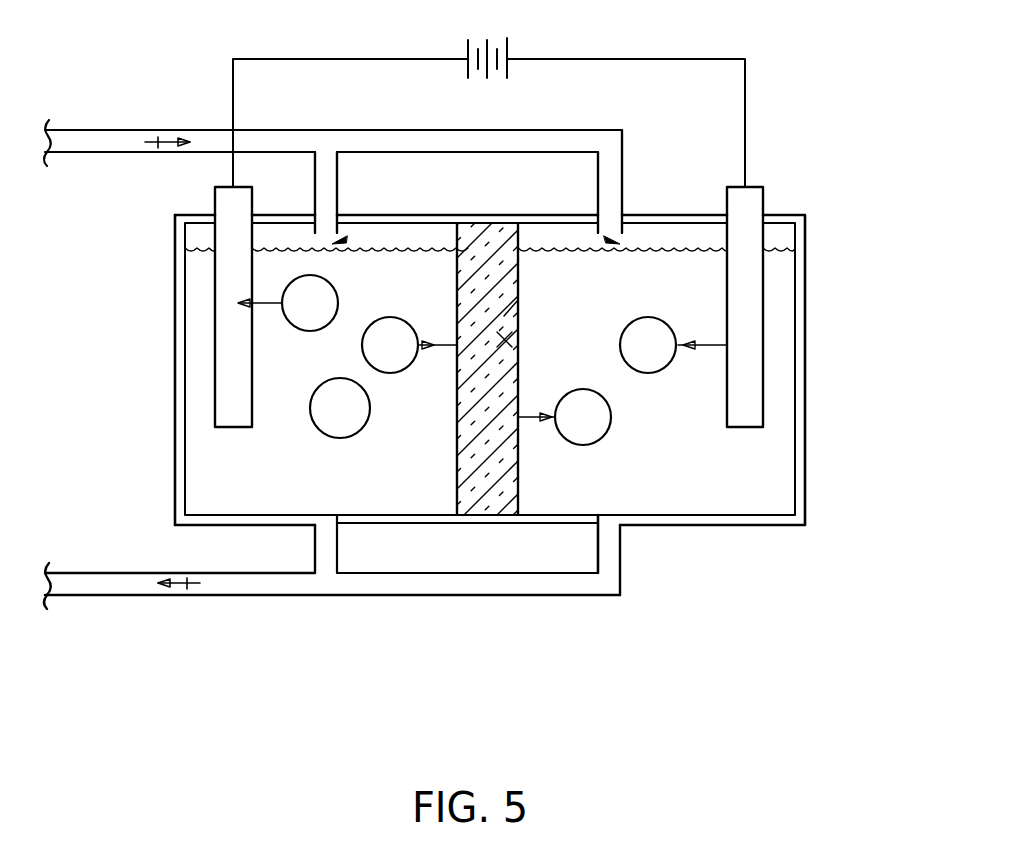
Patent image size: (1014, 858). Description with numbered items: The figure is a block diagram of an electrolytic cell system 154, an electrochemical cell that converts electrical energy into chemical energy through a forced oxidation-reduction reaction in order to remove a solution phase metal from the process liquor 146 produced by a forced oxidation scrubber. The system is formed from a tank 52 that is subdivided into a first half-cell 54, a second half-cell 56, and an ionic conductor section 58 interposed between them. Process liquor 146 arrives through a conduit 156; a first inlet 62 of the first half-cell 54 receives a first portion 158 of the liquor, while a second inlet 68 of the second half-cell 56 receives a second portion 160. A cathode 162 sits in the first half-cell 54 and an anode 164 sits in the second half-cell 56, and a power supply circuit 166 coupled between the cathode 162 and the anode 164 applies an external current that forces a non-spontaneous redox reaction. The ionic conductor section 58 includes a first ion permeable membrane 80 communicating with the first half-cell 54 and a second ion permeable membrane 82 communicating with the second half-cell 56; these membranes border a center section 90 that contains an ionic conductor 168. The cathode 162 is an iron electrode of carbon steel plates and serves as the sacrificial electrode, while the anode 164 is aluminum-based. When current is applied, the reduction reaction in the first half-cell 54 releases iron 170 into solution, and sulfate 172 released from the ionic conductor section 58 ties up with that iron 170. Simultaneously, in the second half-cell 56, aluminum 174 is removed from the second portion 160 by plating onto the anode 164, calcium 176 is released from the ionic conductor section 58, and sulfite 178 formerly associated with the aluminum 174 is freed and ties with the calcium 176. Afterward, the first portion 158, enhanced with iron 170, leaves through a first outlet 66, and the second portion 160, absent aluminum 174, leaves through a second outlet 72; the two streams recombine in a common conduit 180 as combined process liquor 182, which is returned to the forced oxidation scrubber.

The tank 52 is at (805, 378).
The first half-cell 54 is at (568, 232).
The second half-cell 56 is at (288, 213).
The ionic conductor section 58 is at (490, 222).
The first inlet 62 is at (614, 234).
The first outlet 66 is at (622, 550).
The second inlet 68 is at (342, 234).
The second outlet 72 is at (343, 560).
The first ion permeable membrane 80 is at (518, 292).
The second ion permeable membrane 82 is at (457, 292).
The center section 90 is at (518, 306).
The process liquor 146 is at (158, 152).
The electrolytic cell system 154 is at (158, 728).
The conduit 156 is at (101, 129).
The first portion of process liquor 158 is at (790, 234).
The second portion of process liquor 160 is at (185, 234).
The cathode 162 is at (763, 287).
The anode 164 is at (215, 322).
The power supply circuit 166 is at (508, 45).
The ionic conductor 168 is at (505, 340).
The iron 170 is at (680, 360).
The sulfate 172 is at (600, 440).
The aluminum 174 is at (318, 332).
The calcium 176 is at (400, 373).
The sulfite 178 is at (353, 435).
The common conduit 180 is at (440, 597).
The combined process liquor 182 is at (187, 598).